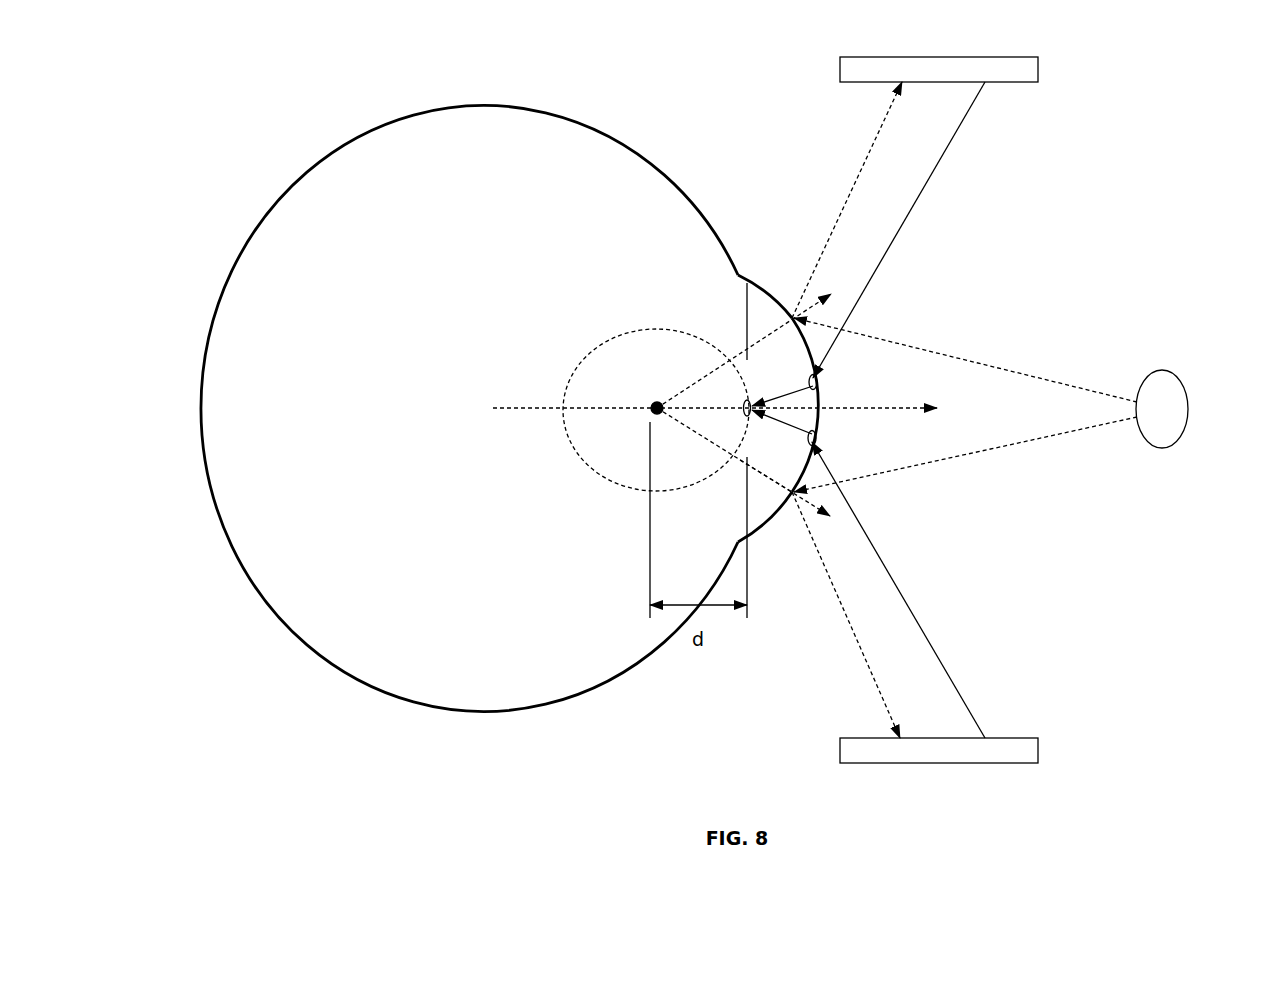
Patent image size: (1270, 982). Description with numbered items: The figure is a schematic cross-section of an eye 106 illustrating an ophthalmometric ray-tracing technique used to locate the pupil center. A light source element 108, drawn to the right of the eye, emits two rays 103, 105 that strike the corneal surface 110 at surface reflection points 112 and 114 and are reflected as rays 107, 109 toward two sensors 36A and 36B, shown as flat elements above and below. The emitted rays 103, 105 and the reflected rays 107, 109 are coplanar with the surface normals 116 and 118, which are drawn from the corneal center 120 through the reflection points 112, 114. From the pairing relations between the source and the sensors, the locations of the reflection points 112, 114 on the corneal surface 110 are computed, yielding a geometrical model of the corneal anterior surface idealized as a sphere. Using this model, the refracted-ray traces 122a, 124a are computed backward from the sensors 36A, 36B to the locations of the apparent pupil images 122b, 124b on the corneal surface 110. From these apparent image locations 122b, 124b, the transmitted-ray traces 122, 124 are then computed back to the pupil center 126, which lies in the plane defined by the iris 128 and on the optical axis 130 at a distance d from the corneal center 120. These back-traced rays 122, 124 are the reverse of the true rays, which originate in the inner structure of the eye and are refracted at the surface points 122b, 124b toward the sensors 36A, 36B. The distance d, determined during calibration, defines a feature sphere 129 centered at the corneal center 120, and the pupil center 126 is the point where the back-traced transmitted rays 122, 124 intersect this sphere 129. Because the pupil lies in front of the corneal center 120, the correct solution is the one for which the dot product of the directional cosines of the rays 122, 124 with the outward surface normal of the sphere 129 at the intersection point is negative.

The eye 106 is at (243, 167).
The reflected ray 107 is at (847, 200).
The light source element 108 is at (1162, 435).
The reflected ray 109 is at (846, 615).
The corneal surface 110 is at (770, 522).
The surface reflection point 112 is at (790, 316).
The surface reflection point 114 is at (792, 492).
The surface normal 116 is at (740, 351).
The surface normal 118 is at (743, 462).
The corneal center 120 is at (652, 415).
The trace of transmitted ray 122 is at (782, 387).
The trace of refracted ray 122a is at (899, 230).
The apparent pupil image 122b is at (820, 380).
The trace of transmitted ray 124 is at (782, 430).
The trace of refracted ray 124a is at (898, 590).
The apparent pupil image 124b is at (820, 438).
The pupil center 126 is at (742, 405).
The iris 128 is at (742, 322).
The feature sphere 129 is at (583, 345).
The optical axis 130 is at (535, 408).
The emitted ray 103 is at (965, 360).
The emitted ray 105 is at (965, 454).
The sensor 36A is at (1013, 68).
The sensor 36B is at (1025, 750).